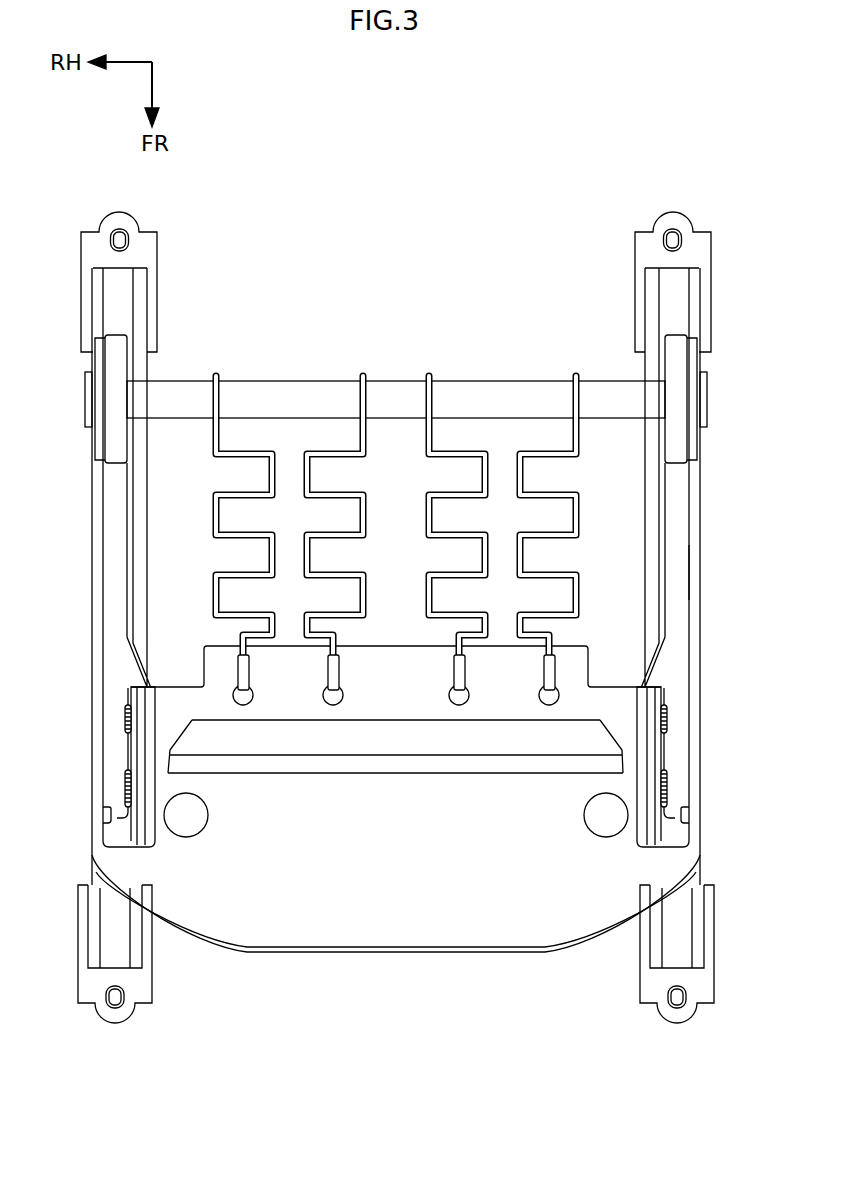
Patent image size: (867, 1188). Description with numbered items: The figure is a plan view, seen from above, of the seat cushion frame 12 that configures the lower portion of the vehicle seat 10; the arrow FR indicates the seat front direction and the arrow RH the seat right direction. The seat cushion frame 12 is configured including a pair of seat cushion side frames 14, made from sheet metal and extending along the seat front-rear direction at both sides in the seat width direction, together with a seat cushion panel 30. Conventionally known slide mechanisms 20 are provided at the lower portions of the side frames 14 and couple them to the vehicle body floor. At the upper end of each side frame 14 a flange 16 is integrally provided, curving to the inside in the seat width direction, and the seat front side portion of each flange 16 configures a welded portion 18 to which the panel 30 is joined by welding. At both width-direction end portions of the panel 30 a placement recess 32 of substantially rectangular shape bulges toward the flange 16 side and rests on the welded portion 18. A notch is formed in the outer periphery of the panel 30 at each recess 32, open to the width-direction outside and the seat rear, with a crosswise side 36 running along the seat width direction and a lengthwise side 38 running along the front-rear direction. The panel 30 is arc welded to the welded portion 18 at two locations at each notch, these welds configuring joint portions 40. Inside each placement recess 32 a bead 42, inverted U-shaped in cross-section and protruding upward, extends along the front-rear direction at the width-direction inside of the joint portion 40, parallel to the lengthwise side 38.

The vehicle seat 10 is at (522, 185).
The seat cushion frame 12 is at (690, 555).
The seat cushion side frame 14 is at (102, 586).
The flange 16 is at (115, 527).
The welded portion 18 is at (137, 762).
The slide mechanism 20 is at (88, 862).
The seat cushion panel 30 is at (385, 957).
The placement recess 32 is at (108, 830).
The crosswise side 36 is at (118, 814).
The lengthwise side 38 is at (127, 752).
The joint portion 40 is at (123, 710).
The bead 42 is at (652, 847).